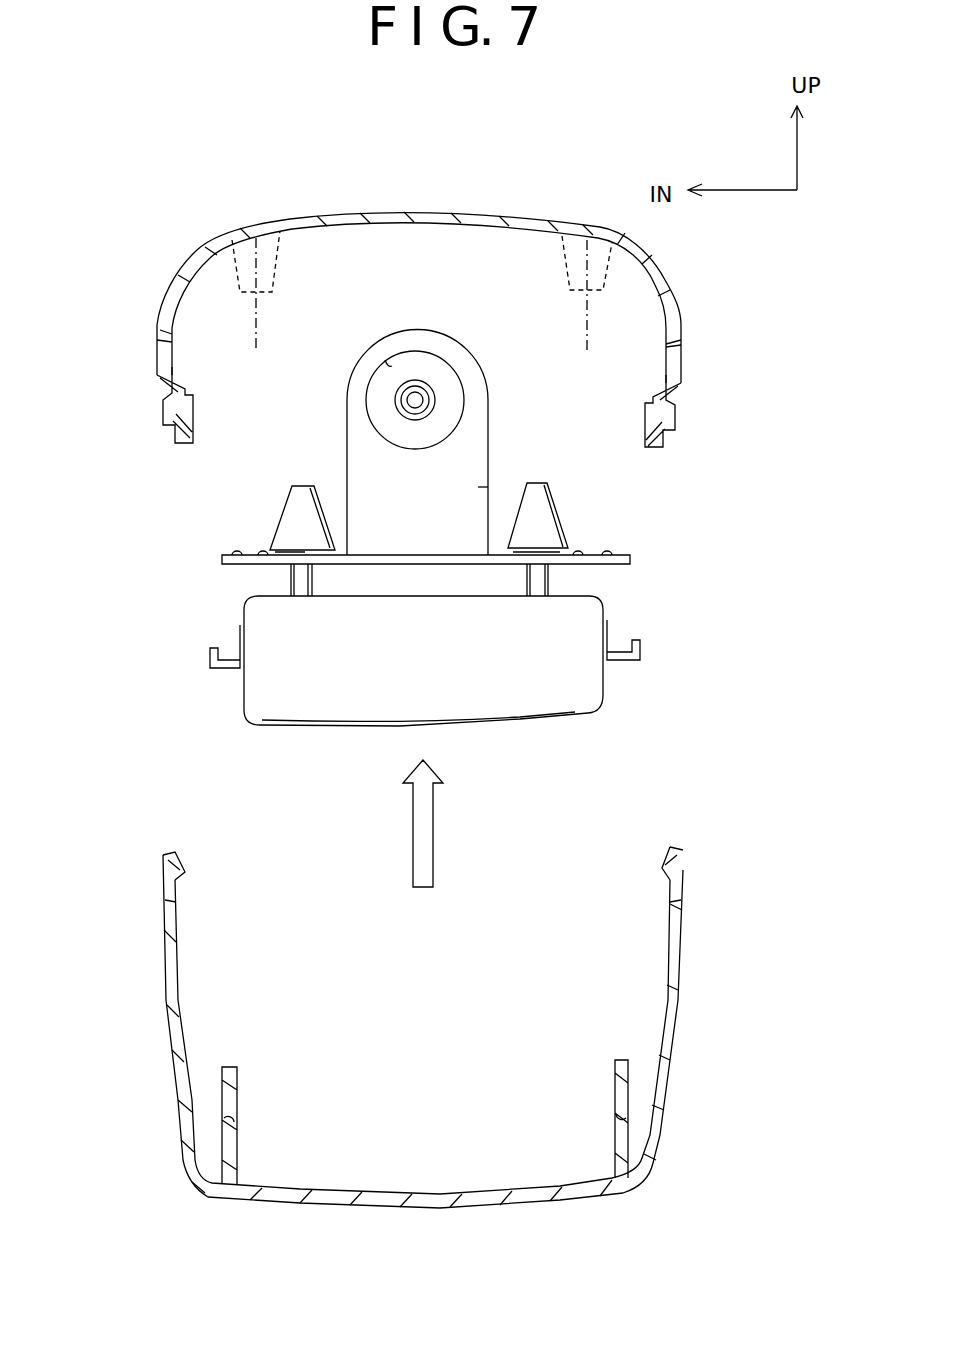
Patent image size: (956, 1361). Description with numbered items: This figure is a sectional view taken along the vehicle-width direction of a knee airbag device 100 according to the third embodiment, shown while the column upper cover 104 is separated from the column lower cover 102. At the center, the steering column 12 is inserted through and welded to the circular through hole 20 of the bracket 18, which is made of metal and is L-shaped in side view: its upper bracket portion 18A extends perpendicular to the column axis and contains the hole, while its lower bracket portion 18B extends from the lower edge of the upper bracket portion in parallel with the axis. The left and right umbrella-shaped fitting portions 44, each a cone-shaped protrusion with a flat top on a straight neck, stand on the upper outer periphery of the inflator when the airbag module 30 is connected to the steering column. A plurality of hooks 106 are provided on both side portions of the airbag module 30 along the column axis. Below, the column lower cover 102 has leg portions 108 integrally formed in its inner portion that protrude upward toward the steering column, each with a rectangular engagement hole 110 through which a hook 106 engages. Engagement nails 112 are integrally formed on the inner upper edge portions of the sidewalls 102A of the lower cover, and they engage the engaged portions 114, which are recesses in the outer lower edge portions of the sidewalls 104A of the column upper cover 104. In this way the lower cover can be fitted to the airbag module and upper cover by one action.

The column upper cover 104 is at (418, 200).
The sidewalls of the column upper cover 104A is at (158, 338).
The engaged portions 114 is at (165, 407).
The bracket 18 is at (334, 459).
The upper bracket portion 18A is at (478, 487).
The lower bracket portion 18B is at (630, 560).
The steering column 12 is at (425, 352).
The through hole 20 is at (388, 364).
The fitting portions 44 is at (282, 522).
The airbag module 30 is at (632, 709).
The hooks 106 is at (210, 662).
The knee airbag device 100 is at (168, 790).
The column lower cover 102 is at (252, 1240).
The sidewalls of the column lower cover 102A is at (170, 1030).
The leg portions 108 is at (230, 1066).
The engagement hole 110 is at (234, 1122).
The engagement nails 112 is at (183, 862).